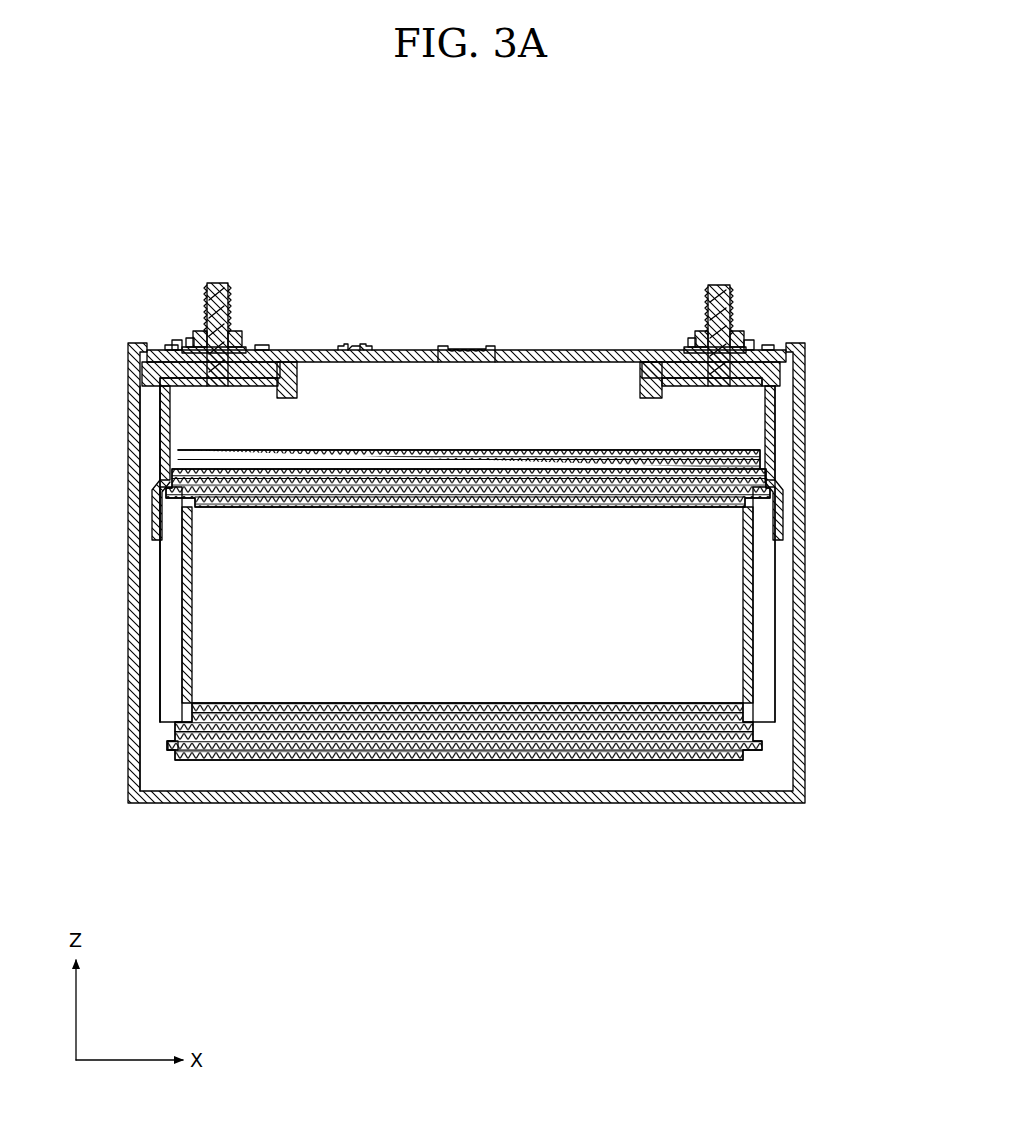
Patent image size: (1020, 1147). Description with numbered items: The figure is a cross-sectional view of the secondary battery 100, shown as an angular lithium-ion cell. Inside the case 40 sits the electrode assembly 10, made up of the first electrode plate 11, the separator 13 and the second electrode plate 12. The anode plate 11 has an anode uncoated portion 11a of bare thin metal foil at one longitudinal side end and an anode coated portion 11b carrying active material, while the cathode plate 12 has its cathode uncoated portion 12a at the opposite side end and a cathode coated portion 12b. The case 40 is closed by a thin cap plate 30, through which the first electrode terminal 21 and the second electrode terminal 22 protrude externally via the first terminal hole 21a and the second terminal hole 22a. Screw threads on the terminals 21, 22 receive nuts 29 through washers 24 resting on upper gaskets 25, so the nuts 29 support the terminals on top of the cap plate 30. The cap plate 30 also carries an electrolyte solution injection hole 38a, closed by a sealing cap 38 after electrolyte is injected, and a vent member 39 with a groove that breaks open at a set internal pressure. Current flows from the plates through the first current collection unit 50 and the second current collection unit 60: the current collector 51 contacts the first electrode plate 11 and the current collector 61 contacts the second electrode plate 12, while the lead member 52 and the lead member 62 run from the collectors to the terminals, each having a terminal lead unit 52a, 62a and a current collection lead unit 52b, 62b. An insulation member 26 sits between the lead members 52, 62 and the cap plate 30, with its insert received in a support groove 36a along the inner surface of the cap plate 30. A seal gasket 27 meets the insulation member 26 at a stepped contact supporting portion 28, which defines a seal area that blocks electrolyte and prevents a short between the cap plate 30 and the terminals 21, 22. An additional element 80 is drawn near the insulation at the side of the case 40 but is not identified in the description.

The secondary battery 100 is at (460, 191).
The electrode assembly 10 is at (474, 683).
The first electrode plate 11 is at (210, 701).
The anode uncoated portion 11a is at (168, 752).
The anode coated portion 11b is at (240, 760).
The second electrode plate 12 is at (739, 701).
The cathode uncoated portion 12a is at (762, 755).
The cathode coated portion 12b is at (714, 688).
The separator 13 is at (420, 740).
The first electrode terminal 21 is at (216, 283).
The first terminal hole 21a is at (235, 346).
The second electrode terminal 22 is at (718, 285).
The second terminal hole 22a is at (702, 346).
The washer 24 is at (192, 345).
The upper gasket 25 is at (176, 346).
The insulation member 26 is at (290, 362).
The seal gasket 27 is at (150, 372).
The contact supporting portion 28 is at (252, 362).
The nut 29 is at (205, 333).
The cap plate 30 is at (545, 350).
The support groove 36a is at (270, 348).
The sealing cap 38 is at (352, 346).
The electrolyte solution injection hole 38a is at (370, 346).
The vent member 39 is at (465, 346).
The case 40 is at (806, 688).
The first current collection unit 50 is at (105, 588).
The current collector 51 is at (158, 640).
The lead member 52 is at (119, 463).
The terminal lead unit 52a is at (168, 402).
The current collection lead unit 52b is at (150, 480).
The second current collection unit 60 is at (838, 553).
The current collector 61 is at (868, 520).
The lead member 62 is at (819, 462).
The terminal lead unit 62a is at (778, 392).
The current collection lead unit 62b is at (785, 480).
The insulating member 80 is at (185, 400).